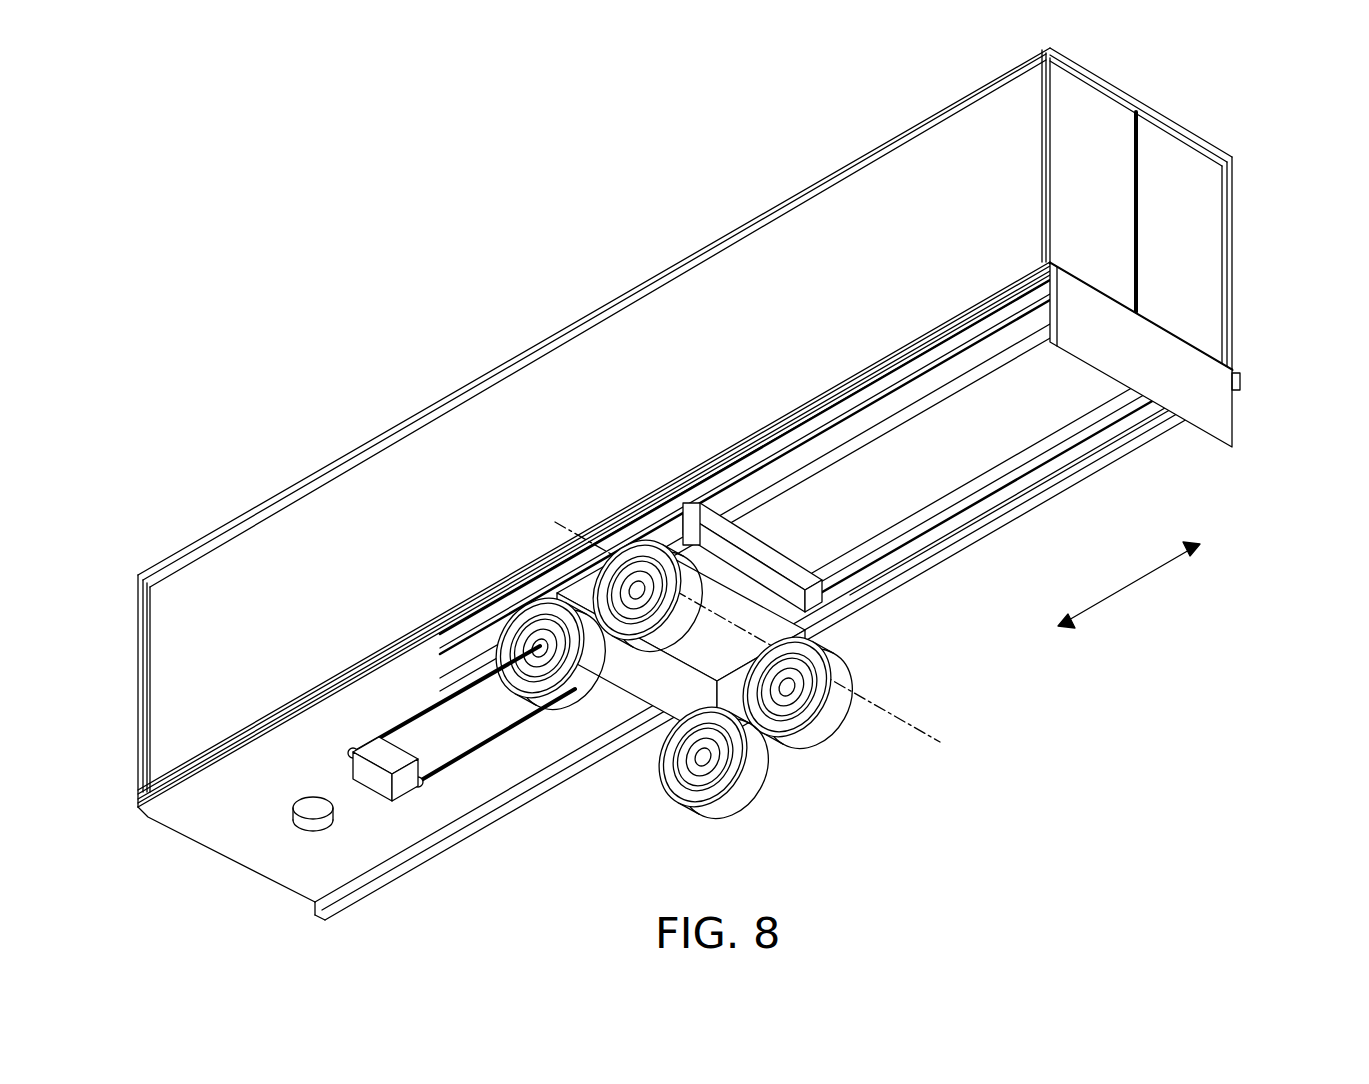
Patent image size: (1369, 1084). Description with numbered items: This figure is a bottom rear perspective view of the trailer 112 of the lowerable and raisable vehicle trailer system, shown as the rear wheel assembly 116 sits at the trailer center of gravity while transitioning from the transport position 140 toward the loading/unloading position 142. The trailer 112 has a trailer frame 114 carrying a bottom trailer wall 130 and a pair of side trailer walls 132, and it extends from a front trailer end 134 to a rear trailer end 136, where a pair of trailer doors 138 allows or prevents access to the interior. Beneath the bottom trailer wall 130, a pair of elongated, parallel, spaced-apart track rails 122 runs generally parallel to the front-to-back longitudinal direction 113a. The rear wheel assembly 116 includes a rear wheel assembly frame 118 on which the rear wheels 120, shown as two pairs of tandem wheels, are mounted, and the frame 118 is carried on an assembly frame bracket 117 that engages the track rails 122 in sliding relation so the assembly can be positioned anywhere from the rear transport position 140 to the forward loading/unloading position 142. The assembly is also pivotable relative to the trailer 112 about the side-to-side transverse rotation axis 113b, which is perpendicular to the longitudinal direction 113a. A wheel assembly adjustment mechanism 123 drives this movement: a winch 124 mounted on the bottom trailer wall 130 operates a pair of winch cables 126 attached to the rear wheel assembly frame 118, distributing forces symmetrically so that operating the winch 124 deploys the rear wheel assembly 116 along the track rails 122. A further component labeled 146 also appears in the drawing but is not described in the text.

The trailer 112 is at (1240, 296).
The longitudinal direction 113a is at (1158, 575).
The transverse rotation axis 113b is at (888, 702).
The trailer frame 114 is at (492, 818).
The rear wheel assembly 116 is at (790, 560).
The assembly frame bracket 117 is at (738, 548).
The rear wheel assembly frame 118 is at (598, 722).
The rear wheels 120 is at (595, 585).
The track rails 122 is at (880, 415).
The wheel assembly adjustment mechanism 123 is at (322, 758).
The winch 124 is at (388, 790).
The winch cables 126 is at (413, 716).
The bottom trailer wall 130 is at (425, 847).
The side trailer walls 132 is at (480, 412).
The front trailer end 134 is at (138, 604).
The rear trailer end 136 is at (1234, 222).
The trailer doors 138 is at (1094, 103).
The transport position 140 is at (1037, 377).
The loading/unloading position 142 is at (384, 697).
The axle 146 is at (583, 545).